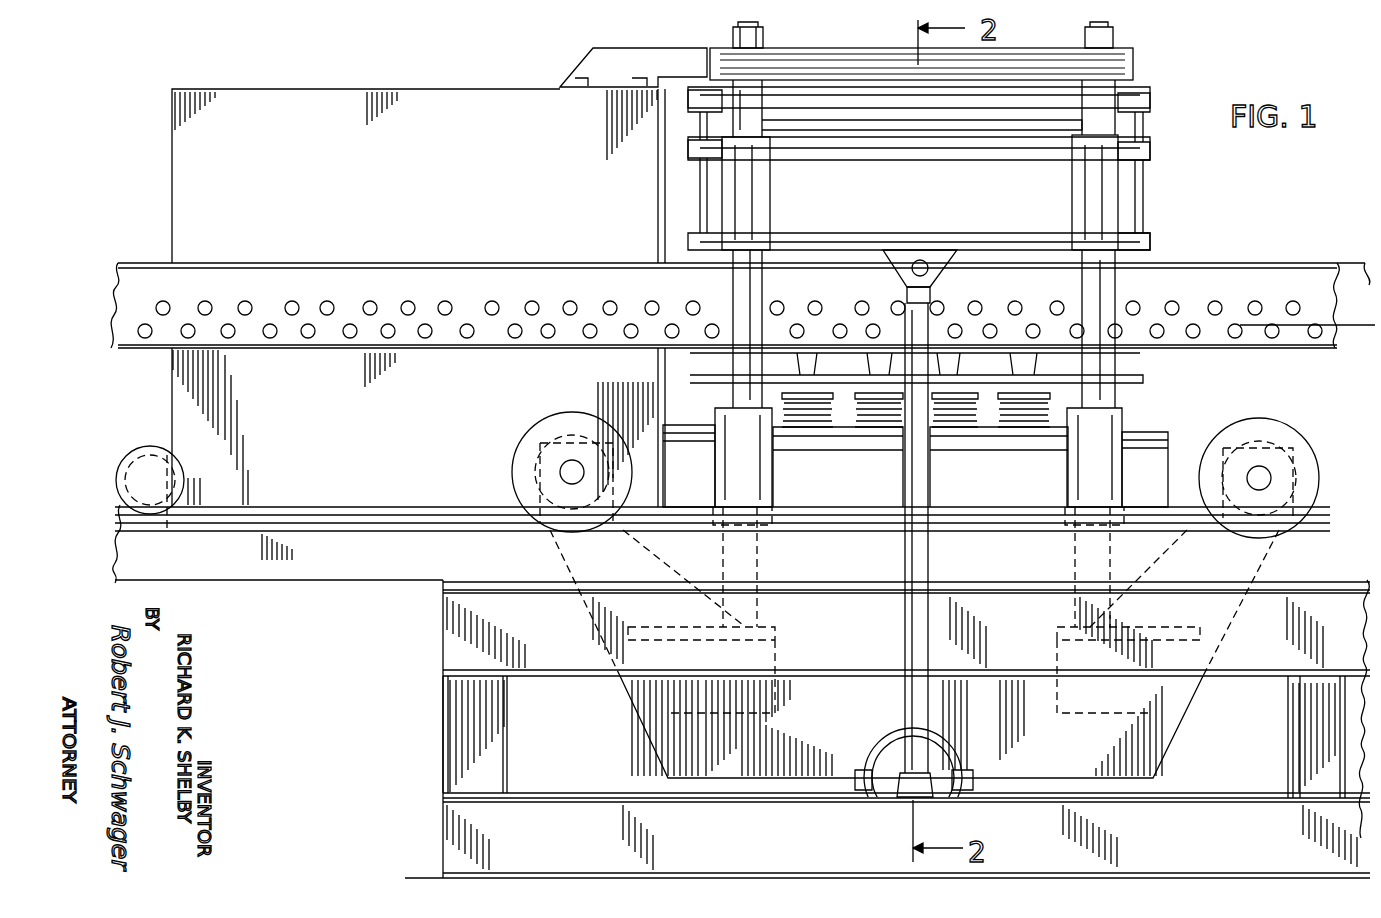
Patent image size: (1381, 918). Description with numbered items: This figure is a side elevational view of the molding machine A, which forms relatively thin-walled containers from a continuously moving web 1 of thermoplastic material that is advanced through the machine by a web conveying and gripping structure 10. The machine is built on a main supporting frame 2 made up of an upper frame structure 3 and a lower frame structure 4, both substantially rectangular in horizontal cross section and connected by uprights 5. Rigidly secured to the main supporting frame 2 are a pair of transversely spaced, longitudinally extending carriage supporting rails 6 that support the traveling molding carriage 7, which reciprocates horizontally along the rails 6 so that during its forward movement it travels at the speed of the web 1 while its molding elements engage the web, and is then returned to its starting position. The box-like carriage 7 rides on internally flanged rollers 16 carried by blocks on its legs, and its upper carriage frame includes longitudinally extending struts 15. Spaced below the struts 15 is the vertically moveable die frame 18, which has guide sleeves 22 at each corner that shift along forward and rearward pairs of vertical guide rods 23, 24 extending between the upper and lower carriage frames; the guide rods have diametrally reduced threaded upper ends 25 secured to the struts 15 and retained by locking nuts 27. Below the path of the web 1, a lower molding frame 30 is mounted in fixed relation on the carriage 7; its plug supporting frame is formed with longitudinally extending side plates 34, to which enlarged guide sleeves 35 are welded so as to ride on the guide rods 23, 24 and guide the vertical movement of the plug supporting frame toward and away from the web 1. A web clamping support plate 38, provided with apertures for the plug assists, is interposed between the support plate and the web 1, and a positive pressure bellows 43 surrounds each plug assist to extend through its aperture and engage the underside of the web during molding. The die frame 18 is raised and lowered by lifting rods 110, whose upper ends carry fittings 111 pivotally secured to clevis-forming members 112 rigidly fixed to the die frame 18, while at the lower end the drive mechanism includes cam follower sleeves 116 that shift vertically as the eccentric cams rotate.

The web 1 is at (1370, 324).
The main supporting frame 2 is at (435, 688).
The upper frame structure 3 is at (443, 626).
The lower frame structure 4 is at (443, 842).
The uprights 5 is at (443, 736).
The carriage supporting rails 6 is at (372, 583).
The traveling molding carriage 7 is at (1188, 749).
The web conveying and gripping structure 10 is at (1289, 266).
The struts 15 is at (1133, 55).
The internally flanged rollers 16 is at (512, 470).
The die frame 18 is at (1160, 157).
The guide sleeves 22 is at (769, 217).
The forward guide rods 23 is at (757, 298).
The rearward guide rods 24 is at (1112, 298).
The threaded upper ends 25 is at (763, 34).
The locking nuts 27 is at (733, 40).
The lower molding frame 30 is at (1184, 446).
The side plates 34 is at (806, 484).
The enlarged guide sleeves 35 is at (718, 468).
The web clamping support plate 38 is at (1142, 385).
The positive pressure bellows 43 is at (876, 418).
The lifting rods 110 is at (930, 336).
The fittings 111 is at (895, 305).
The clevis-forming members 112 is at (906, 273).
The cam follower sleeves 116 is at (958, 760).
The molding machine A is at (1233, 215).